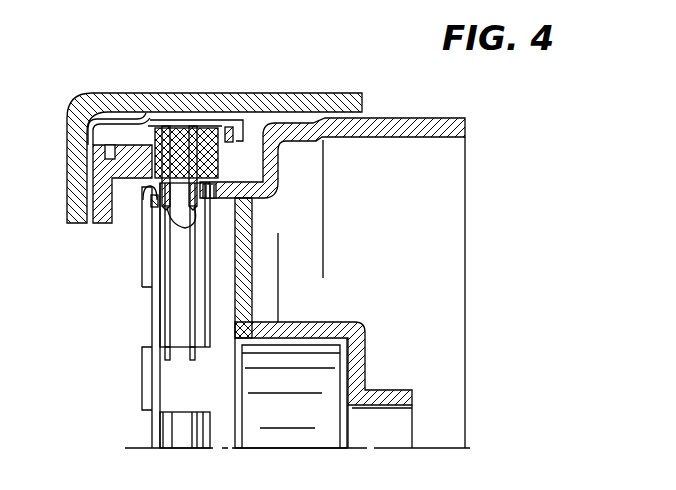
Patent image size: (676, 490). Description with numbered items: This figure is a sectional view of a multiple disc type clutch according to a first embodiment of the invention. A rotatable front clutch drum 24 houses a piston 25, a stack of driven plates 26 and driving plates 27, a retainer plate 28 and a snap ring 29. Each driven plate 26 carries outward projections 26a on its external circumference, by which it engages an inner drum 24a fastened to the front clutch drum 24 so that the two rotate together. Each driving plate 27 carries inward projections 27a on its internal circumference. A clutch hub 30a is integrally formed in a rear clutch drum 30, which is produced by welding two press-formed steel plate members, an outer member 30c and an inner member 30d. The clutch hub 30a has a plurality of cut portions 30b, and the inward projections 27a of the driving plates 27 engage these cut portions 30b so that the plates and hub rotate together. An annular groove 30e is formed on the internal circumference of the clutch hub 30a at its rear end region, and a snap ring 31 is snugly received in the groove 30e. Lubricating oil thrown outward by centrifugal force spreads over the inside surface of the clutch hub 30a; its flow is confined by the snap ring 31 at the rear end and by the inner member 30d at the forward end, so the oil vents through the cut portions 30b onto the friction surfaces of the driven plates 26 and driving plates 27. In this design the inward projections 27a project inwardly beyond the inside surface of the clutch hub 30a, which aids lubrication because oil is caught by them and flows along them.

The front clutch drum 24 is at (72, 108).
The inner drum 24a is at (90, 131).
The piston 25 is at (128, 162).
The driven plates 26 is at (190, 163).
The outward projections 26a is at (157, 130).
The driving plates 27 is at (167, 127).
The inward projections 27a is at (185, 229).
The retainer plate 28 is at (208, 122).
The snap ring 29 is at (229, 127).
The rear clutch drum 30 is at (433, 118).
The clutch hub 30a is at (252, 210).
The cut portions 30b is at (205, 203).
The outer member 30c is at (393, 137).
The inner member 30d is at (325, 322).
The annular groove 30e is at (148, 190).
The snap ring 31 is at (142, 193).